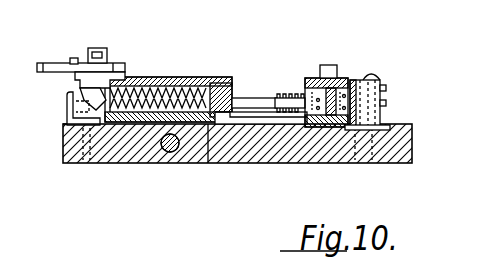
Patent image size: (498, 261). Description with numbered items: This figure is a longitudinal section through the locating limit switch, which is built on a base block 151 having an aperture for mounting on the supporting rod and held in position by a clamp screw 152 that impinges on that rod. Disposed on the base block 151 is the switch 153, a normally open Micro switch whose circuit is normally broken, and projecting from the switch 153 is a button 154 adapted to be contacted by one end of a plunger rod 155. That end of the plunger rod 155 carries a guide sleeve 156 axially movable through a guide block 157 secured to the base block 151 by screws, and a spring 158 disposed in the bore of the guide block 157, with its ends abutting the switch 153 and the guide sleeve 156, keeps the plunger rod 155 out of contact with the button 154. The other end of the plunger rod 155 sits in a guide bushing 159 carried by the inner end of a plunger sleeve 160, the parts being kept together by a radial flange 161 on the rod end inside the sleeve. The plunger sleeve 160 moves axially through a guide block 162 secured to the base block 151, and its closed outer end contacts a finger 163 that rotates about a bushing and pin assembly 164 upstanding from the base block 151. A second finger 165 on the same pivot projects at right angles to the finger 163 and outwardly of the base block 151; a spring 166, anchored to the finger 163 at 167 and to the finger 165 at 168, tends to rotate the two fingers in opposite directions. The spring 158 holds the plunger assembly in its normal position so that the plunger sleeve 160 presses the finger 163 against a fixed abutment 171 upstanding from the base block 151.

The base block 151 is at (395, 163).
The clamp screw 152 is at (167, 152).
The switch 153 is at (386, 93).
The button 154 is at (355, 90).
The plunger rod 155 is at (260, 98).
The guide sleeve 156 is at (300, 86).
The guide block 157 is at (342, 78).
The spring 158 is at (325, 70).
The guide bushing 159 is at (238, 93).
The plunger sleeve 160 is at (227, 85).
The radial flange 161 is at (208, 163).
The guide block 162 is at (190, 78).
The finger 163 is at (78, 100).
The bushing and pin assembly 164 is at (105, 49).
The second finger 165 is at (50, 64).
The spring 166 is at (78, 80).
The anchor point on finger 167 is at (78, 91).
The anchor point on second finger 168 is at (75, 58).
The fixed abutment 171 is at (63, 125).